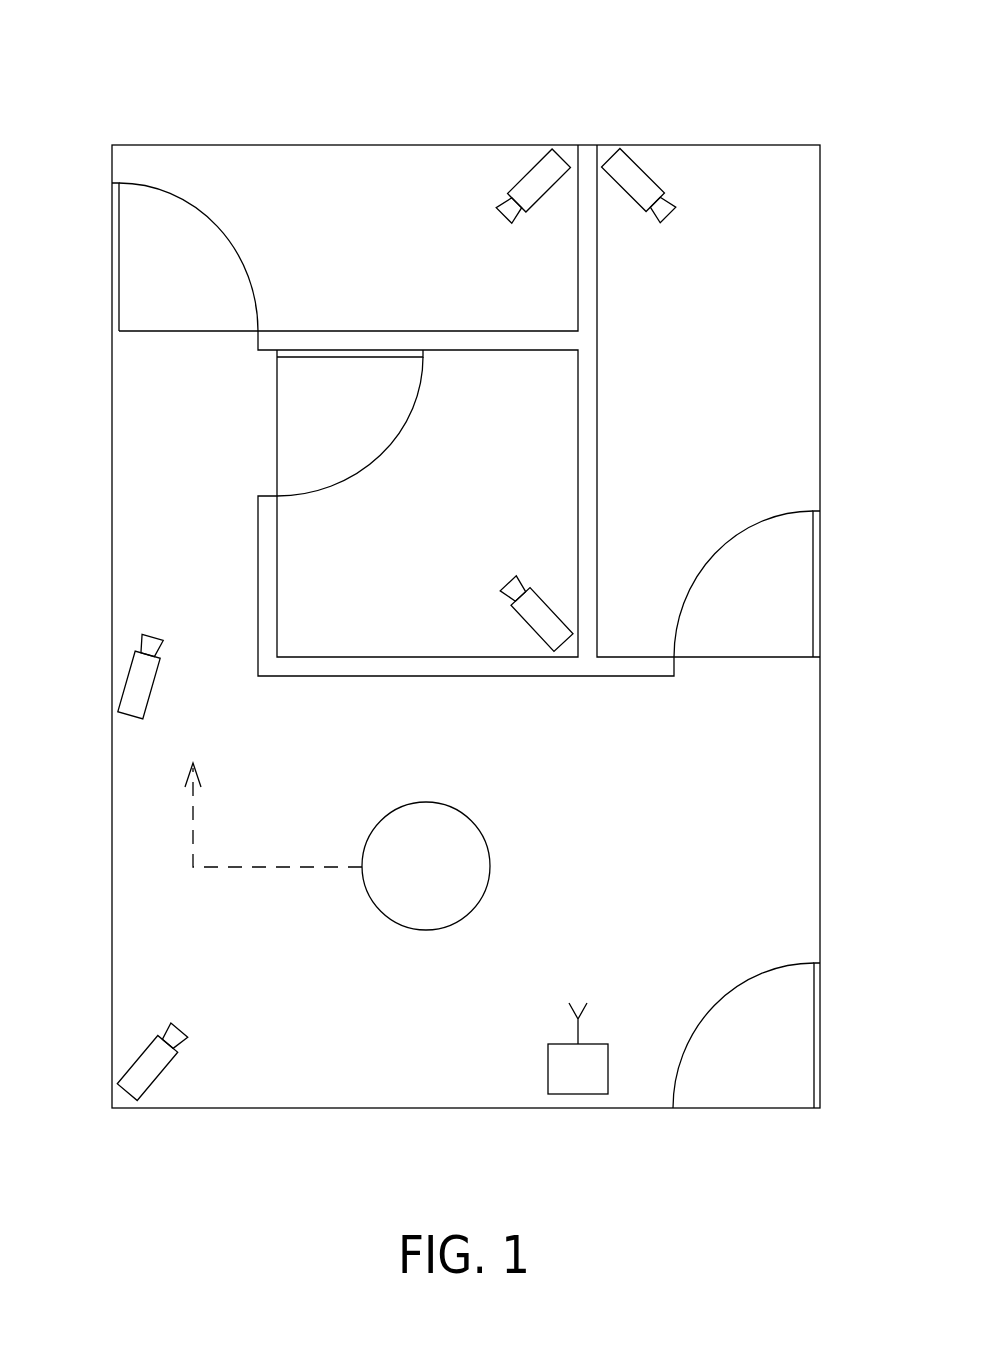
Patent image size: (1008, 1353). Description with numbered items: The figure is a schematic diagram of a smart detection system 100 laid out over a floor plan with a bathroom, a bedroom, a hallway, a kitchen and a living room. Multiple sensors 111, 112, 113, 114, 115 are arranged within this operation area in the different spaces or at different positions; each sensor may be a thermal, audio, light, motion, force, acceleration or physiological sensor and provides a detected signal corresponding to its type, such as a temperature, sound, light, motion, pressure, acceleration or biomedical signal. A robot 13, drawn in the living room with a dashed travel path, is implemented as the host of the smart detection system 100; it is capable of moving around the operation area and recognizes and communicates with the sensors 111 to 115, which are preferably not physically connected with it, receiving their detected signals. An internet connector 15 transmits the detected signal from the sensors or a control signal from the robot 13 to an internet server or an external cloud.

The smart detection system 100 is at (84, 56).
The sensor 111 is at (548, 623).
The sensor 112 is at (140, 683).
The sensor 113 is at (531, 183).
The sensor 114 is at (151, 1070).
The sensor 115 is at (636, 177).
The robot 13 is at (437, 930).
The internet connector 15 is at (588, 1082).